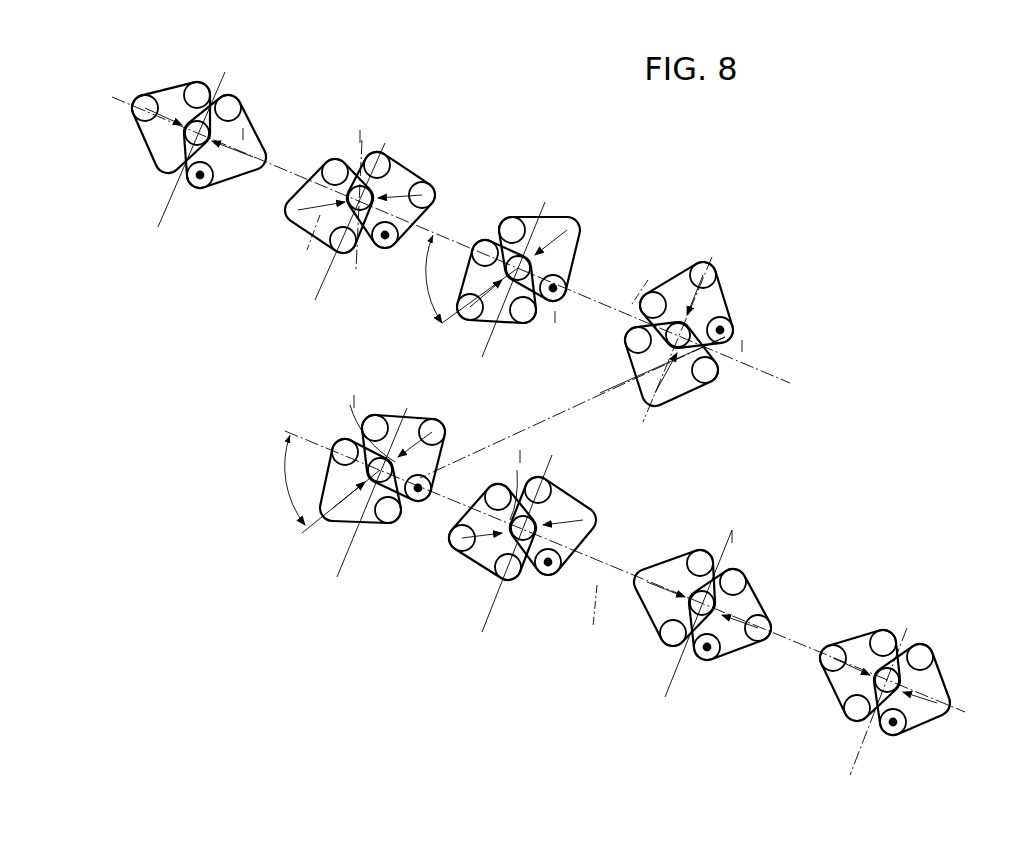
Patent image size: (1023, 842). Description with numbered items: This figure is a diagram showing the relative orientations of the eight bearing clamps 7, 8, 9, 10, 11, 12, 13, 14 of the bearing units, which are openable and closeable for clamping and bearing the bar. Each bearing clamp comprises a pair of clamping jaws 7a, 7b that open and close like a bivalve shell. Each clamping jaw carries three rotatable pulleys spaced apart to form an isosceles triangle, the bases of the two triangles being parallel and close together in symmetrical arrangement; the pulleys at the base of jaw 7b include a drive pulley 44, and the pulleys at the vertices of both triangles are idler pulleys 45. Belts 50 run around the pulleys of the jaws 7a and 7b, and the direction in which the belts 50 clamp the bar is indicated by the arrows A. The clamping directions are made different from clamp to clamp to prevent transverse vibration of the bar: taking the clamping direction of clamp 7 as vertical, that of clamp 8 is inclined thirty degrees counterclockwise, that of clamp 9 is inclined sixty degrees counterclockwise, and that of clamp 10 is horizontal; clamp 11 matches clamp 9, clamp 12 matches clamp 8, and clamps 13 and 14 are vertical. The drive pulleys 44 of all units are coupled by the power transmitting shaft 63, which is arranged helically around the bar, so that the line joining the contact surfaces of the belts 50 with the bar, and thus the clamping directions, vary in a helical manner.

The bearing clamp 7 is at (193, 200).
The bearing clamp 8 is at (352, 272).
The bearing clamp 9 is at (535, 336).
The bearing clamp 10 is at (690, 405).
The bearing clamp 11 is at (369, 538).
The bearing clamp 12 is at (522, 612).
The bearing clamp 13 is at (698, 687).
The bearing clamp 14 is at (877, 625).
The clamping jaw 7a is at (173, 88).
The clamping jaw 7b is at (256, 98).
The drive pulley 44 is at (204, 178).
The idler pulley 45 is at (145, 98).
The belt 50 is at (140, 140).
The power transmitting shaft 63 is at (484, 431).